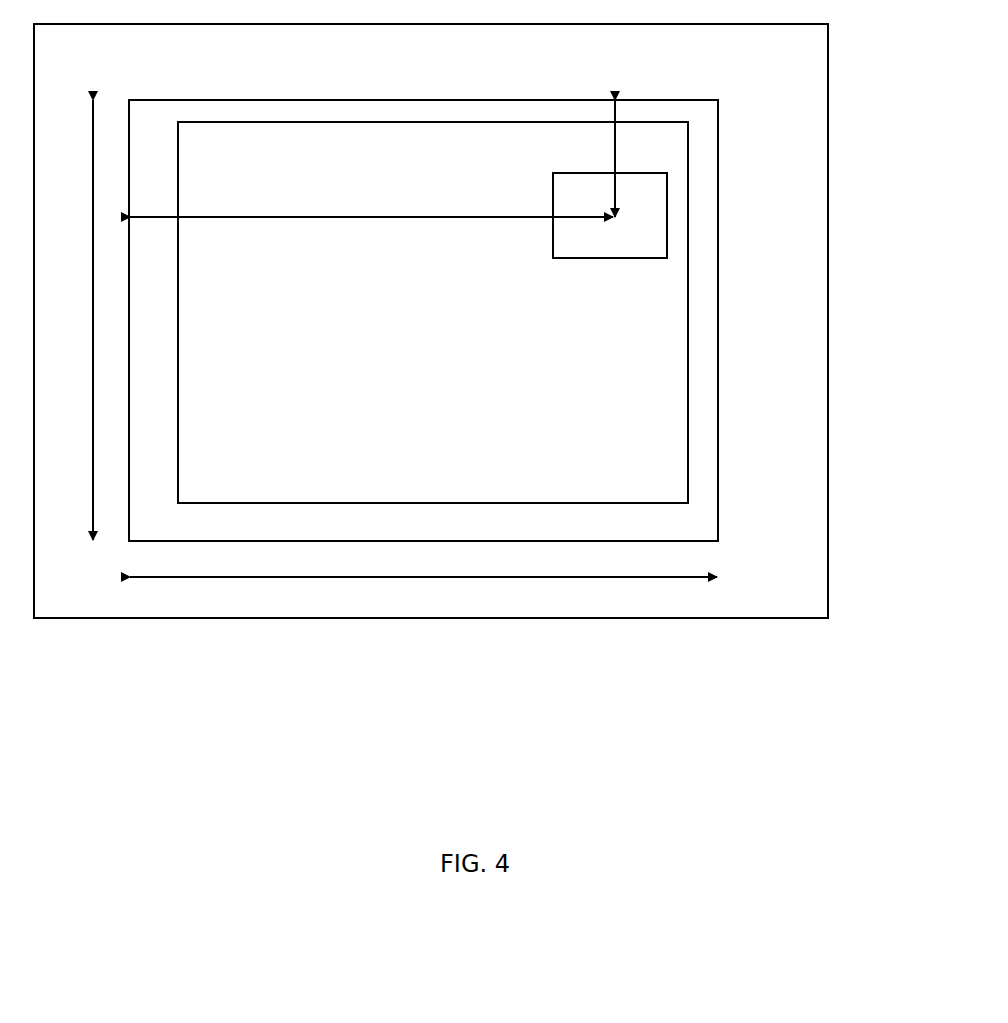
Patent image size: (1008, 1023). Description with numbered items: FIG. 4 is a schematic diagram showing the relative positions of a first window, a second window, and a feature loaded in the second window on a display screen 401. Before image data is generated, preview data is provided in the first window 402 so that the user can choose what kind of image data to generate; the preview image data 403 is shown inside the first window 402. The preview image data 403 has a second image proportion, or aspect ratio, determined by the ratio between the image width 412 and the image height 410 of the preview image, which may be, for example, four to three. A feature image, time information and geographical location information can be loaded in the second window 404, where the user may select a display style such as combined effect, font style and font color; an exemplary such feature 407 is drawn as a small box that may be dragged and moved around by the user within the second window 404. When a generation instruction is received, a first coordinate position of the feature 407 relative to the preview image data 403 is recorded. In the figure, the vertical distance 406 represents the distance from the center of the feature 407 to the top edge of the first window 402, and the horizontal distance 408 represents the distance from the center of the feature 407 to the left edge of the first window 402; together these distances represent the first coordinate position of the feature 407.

The display screen 401 is at (828, 100).
The first window 402 is at (718, 110).
The preview image data 403 is at (703, 185).
The second window 404 is at (381, 125).
The distance from center of feature to top edge of first window 406 is at (620, 125).
The feature 407 is at (628, 190).
The distance from center of feature to left edge of first window 408 is at (328, 216).
The image height 410 is at (100, 92).
The image width 412 is at (733, 577).